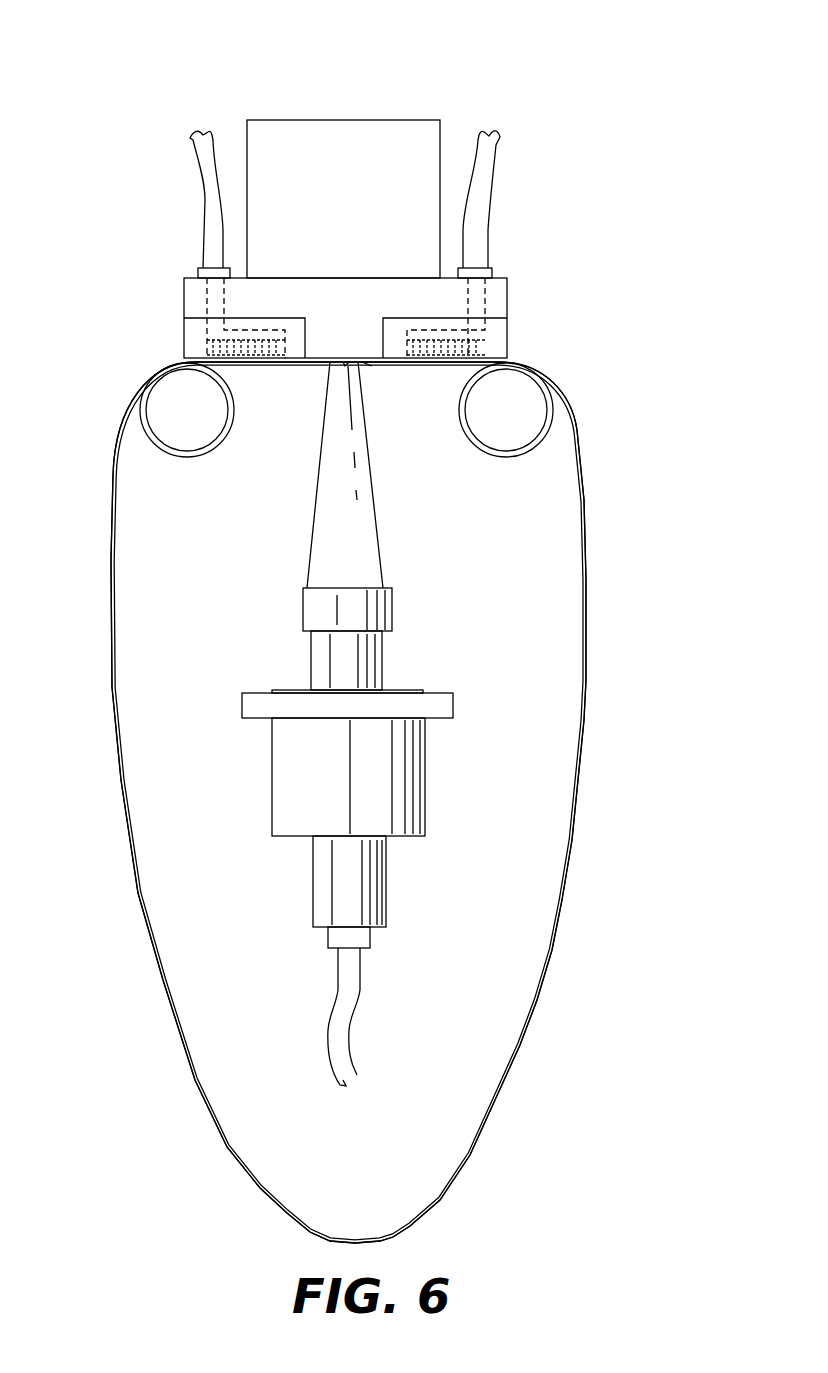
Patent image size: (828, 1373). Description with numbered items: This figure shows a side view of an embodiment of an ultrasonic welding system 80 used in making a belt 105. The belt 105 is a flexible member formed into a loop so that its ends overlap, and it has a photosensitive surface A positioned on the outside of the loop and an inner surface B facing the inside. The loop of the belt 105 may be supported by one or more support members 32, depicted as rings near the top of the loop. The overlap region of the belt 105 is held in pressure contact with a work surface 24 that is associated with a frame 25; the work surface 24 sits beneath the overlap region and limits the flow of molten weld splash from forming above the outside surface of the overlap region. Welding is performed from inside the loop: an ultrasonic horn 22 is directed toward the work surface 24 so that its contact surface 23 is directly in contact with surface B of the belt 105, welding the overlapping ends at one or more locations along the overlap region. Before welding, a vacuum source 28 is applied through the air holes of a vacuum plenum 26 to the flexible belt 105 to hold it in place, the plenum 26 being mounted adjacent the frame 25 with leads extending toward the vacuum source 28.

The ultrasonic horn 22 is at (337, 515).
The contact surface 23 is at (345, 364).
The work surface 24 is at (370, 363).
The frame 25 is at (342, 120).
The vacuum plenum 26 is at (184, 335).
The vacuum source 28 is at (199, 118).
The support members 32 is at (152, 440).
The ultrasonic welding system 80 is at (597, 968).
The belt 105 is at (193, 1083).
The photosensitive surface A is at (110, 688).
The surface B is at (122, 780).